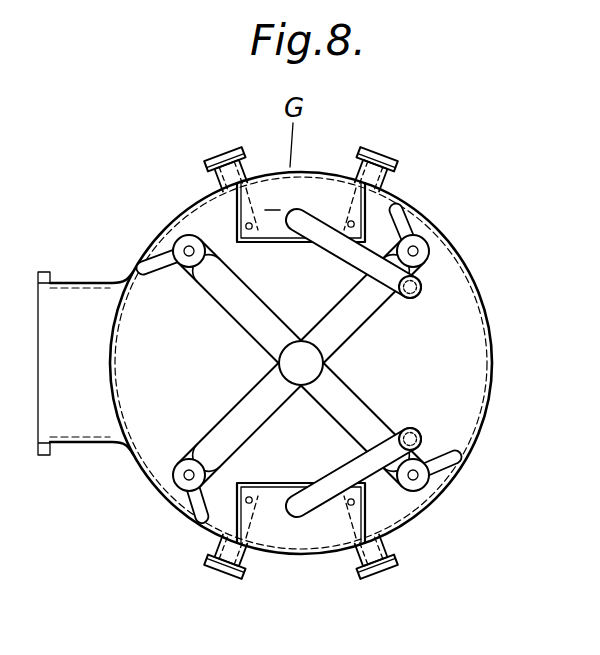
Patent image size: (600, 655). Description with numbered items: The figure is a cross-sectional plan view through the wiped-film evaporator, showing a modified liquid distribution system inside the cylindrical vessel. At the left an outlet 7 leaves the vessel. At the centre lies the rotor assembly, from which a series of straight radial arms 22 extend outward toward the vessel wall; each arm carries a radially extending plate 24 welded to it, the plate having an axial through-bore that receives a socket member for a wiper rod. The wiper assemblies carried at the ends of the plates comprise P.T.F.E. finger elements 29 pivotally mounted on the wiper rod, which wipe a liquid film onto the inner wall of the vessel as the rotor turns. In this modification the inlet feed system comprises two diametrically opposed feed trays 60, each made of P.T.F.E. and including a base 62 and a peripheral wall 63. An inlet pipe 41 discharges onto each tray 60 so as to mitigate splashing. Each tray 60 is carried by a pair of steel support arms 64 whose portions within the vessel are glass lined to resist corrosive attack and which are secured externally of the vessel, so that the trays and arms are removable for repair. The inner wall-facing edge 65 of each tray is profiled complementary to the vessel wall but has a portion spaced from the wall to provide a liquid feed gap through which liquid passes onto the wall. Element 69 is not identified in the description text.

The outlet 7 is at (67, 313).
The radial arm 22 is at (260, 390).
The radially extending plate 24 is at (336, 363).
The finger element 29 is at (157, 260).
The inlet pipe 41 is at (381, 284).
The feed tray 60 is at (327, 167).
The base 62 is at (279, 194).
The peripheral wall 63 is at (285, 247).
The support arm 64 is at (222, 207).
The inner wall-facing edge 65 is at (307, 173).
The pin 69 is at (249, 228).